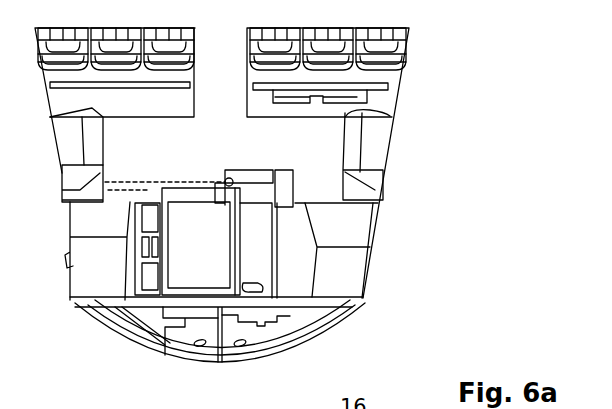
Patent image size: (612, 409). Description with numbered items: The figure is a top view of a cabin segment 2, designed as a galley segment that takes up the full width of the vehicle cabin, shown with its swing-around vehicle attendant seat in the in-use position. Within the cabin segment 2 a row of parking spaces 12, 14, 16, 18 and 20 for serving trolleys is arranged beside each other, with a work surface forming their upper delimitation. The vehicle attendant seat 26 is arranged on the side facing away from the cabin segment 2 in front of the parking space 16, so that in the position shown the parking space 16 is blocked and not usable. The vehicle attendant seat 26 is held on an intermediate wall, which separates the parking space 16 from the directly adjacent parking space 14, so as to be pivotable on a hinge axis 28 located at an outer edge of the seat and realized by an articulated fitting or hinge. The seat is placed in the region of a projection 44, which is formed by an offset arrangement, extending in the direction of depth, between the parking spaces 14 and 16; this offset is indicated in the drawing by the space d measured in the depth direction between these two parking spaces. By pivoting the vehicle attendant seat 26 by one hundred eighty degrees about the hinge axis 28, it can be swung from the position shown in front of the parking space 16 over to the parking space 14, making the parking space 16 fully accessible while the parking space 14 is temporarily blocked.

The cabin segment 2 is at (382, 280).
The parking space 12 is at (160, 170).
The parking space 14 is at (195, 175).
The parking space 16 is at (231, 152).
The parking space 18 is at (289, 180).
The parking space 20 is at (326, 183).
The vehicle attendant seat 26 is at (256, 168).
The hinge axis 28 is at (232, 185).
The projection 44 is at (213, 171).
The space d is at (118, 152).